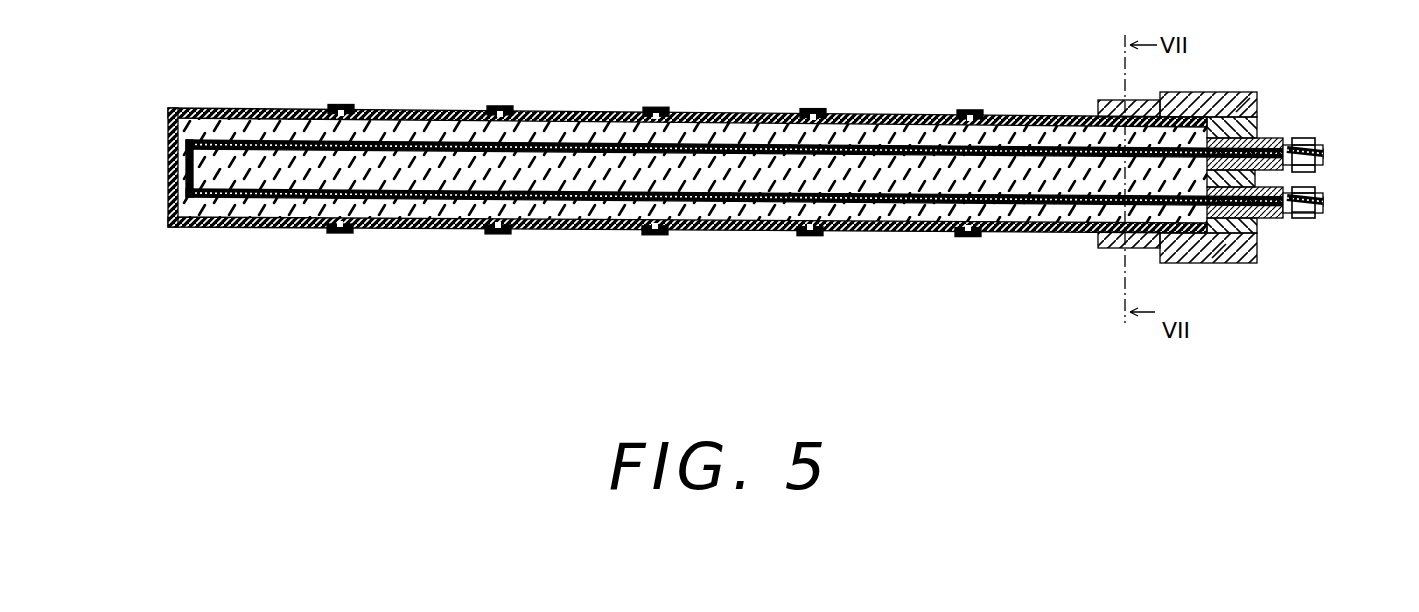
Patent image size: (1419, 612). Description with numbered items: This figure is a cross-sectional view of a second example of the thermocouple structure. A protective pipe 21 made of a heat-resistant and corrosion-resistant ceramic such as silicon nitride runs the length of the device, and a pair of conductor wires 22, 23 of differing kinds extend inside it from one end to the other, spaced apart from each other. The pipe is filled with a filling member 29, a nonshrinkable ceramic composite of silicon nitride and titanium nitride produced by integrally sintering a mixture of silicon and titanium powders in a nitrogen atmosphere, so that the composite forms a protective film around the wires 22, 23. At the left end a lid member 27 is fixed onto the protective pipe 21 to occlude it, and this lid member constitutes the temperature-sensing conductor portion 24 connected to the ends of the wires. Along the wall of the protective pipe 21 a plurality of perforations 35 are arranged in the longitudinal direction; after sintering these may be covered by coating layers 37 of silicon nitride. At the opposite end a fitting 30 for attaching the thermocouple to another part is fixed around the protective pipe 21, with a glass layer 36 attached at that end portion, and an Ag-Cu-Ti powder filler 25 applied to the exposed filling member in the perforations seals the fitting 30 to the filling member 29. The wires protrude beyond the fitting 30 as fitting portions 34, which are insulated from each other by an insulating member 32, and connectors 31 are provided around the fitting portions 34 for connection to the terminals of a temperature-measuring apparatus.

The protective pipe 21 is at (693, 113).
The conductor wire 22 is at (404, 141).
The conductor wire 23 is at (446, 199).
The temperature-sensing conductor portion 24 is at (186, 188).
The filler 25 is at (1124, 112).
The lid member 27 is at (168, 126).
The filling member 29 is at (566, 170).
The fitting 30 is at (1201, 94).
The connector 31 is at (1306, 139).
The insulating member 32 is at (1264, 219).
The fitting portion 34 is at (1326, 156).
The perforation 35 is at (339, 106).
The glass layer 36 is at (1243, 101).
The coating layer 37 is at (346, 106).